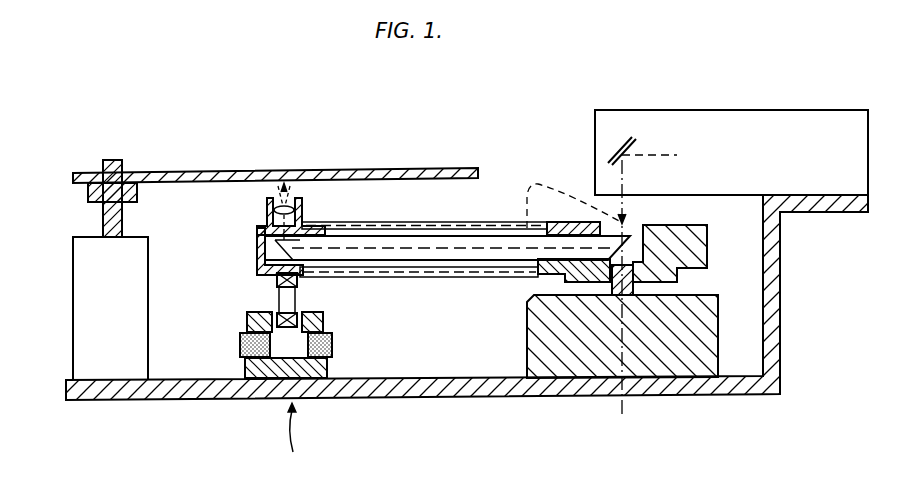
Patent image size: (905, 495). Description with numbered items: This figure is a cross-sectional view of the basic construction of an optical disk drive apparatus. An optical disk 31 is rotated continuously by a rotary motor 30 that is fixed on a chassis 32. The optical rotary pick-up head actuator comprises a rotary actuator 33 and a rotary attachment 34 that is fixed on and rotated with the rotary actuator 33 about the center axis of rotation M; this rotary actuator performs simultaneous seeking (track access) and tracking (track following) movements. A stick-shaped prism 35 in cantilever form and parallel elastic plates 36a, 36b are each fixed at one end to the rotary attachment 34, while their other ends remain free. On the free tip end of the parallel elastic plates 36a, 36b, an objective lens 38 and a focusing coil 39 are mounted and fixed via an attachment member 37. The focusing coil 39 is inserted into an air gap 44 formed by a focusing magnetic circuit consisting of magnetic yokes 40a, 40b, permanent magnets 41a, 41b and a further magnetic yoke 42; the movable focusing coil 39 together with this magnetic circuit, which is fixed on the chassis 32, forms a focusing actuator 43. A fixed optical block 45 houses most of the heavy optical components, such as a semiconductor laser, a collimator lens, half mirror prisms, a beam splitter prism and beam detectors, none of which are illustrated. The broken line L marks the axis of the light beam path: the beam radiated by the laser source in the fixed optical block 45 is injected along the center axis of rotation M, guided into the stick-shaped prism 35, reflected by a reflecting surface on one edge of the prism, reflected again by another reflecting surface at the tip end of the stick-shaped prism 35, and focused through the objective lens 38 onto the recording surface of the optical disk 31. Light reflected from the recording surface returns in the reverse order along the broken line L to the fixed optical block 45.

The rotary motor 30 is at (78, 251).
The optical disk 31 is at (388, 168).
The chassis 32 is at (748, 381).
The rotary actuator 33 is at (540, 354).
The rotary attachment 34 is at (708, 262).
The stick-shaped prism 35 is at (437, 265).
The parallel elastic plate 36a is at (415, 222).
The parallel elastic plate 36b is at (493, 277).
The attachment member 37 is at (257, 237).
The objective lens 38 is at (278, 183).
The focusing coil 39 is at (275, 283).
The magnetic yoke 40a is at (247, 322).
The magnetic yoke 40b is at (323, 324).
The permanent magnet 41a is at (240, 348).
The permanent magnet 41b is at (332, 352).
The magnetic yoke 42 is at (268, 372).
The focusing actuator 43 is at (306, 438).
The air gap 44 is at (302, 308).
The fixed optical block 45 is at (790, 127).
The axis of light beam path L is at (576, 193).
The center axis of rotation M is at (623, 402).